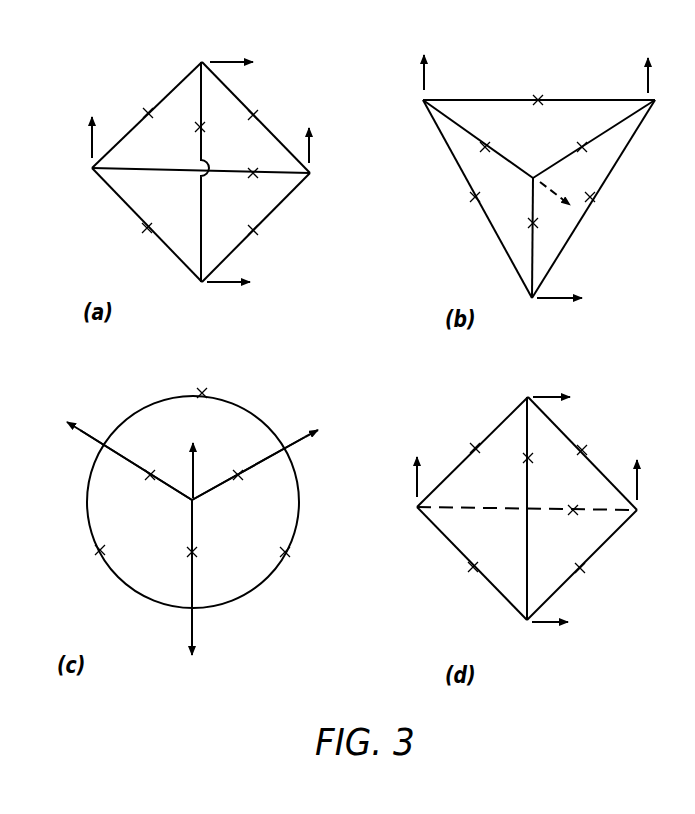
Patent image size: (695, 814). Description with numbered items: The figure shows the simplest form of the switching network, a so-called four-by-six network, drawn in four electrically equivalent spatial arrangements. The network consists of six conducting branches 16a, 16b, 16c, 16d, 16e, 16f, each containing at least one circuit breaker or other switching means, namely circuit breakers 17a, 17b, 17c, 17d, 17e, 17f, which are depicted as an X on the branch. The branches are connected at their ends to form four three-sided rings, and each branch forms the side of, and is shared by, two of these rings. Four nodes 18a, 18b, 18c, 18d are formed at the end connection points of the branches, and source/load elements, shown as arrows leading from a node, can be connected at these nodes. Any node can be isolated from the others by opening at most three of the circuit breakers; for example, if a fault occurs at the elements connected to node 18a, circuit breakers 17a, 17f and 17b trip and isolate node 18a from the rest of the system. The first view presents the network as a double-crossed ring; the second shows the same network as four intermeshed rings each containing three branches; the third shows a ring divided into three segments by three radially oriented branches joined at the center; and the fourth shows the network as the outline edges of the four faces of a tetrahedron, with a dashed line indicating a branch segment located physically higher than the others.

The conducting branch 16a is at (173, 87).
The conducting branch 16b is at (241, 96).
The conducting branch 16c is at (284, 200).
The conducting branch 16d is at (126, 208).
The conducting branch 16e is at (183, 168).
The conducting branch 16f is at (214, 166).
The circuit breaker 17a is at (146, 112).
The circuit breaker 17b is at (255, 115).
The circuit breaker 17c is at (254, 232).
The circuit breaker 17d is at (147, 230).
The circuit breaker 17e is at (253, 176).
The circuit breaker 17f is at (202, 127).
The node 18a is at (204, 59).
The node 18b is at (312, 173).
The node 18c is at (202, 284).
The node 18d is at (90, 168).